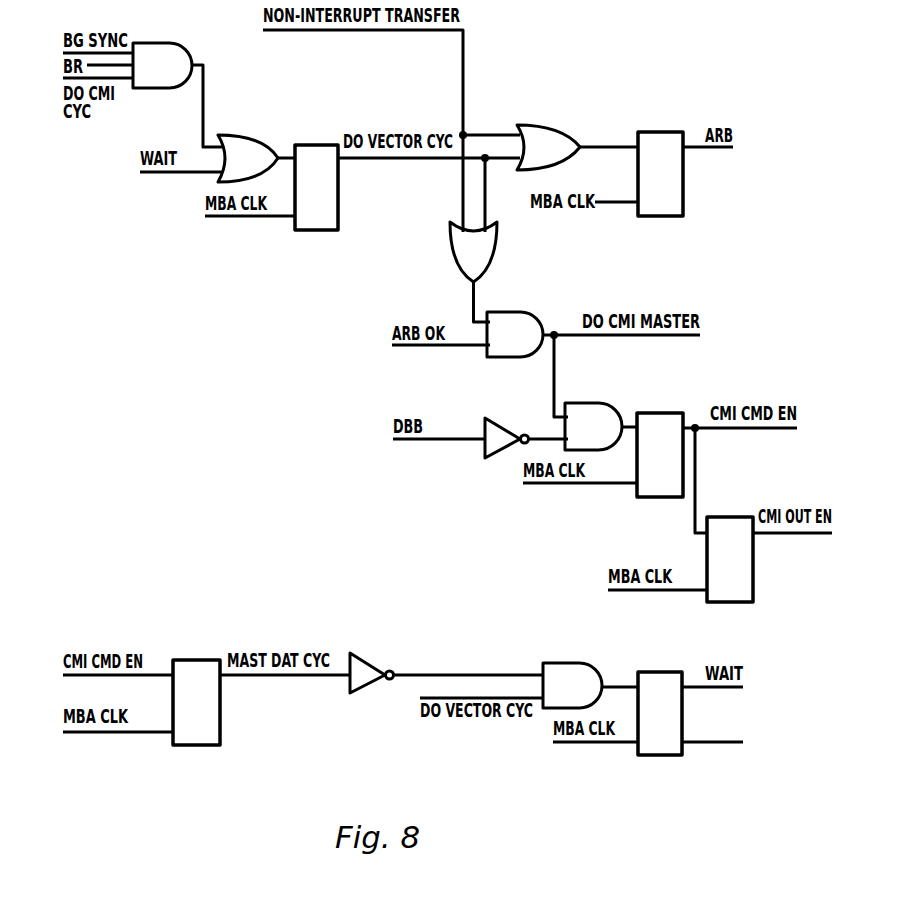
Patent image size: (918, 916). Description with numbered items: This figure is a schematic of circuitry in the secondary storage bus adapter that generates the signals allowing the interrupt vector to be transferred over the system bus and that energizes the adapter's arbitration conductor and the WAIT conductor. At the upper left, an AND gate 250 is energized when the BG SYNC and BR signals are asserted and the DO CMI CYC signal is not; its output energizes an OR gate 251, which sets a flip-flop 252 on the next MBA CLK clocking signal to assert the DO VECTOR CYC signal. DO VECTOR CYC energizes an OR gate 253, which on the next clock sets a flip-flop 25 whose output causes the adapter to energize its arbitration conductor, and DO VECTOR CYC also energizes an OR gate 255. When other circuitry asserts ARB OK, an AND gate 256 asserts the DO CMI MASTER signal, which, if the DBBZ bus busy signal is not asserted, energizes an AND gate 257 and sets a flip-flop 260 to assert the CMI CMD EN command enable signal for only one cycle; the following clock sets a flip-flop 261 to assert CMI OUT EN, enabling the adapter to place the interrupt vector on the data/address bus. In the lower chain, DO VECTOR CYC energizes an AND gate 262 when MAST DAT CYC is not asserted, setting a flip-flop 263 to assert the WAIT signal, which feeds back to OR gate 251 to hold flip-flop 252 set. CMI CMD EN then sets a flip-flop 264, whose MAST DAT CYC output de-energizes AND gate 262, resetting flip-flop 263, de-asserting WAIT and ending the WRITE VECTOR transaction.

The AND gate 250 is at (162, 44).
The OR gate 251 is at (248, 139).
The flip-flop 252 is at (318, 167).
The OR gate 253 is at (548, 124).
The flip-flop (ARB) 25 is at (661, 151).
The OR gate 255 is at (436, 252).
The AND gate 256 is at (515, 311).
The AND gate 257 is at (593, 402).
The flip-flop 260 is at (660, 433).
The flip-flop 261 is at (730, 538).
The flip-flop 264 is at (197, 679).
The AND gate 262 is at (572, 663).
The flip-flop 263 is at (661, 690).